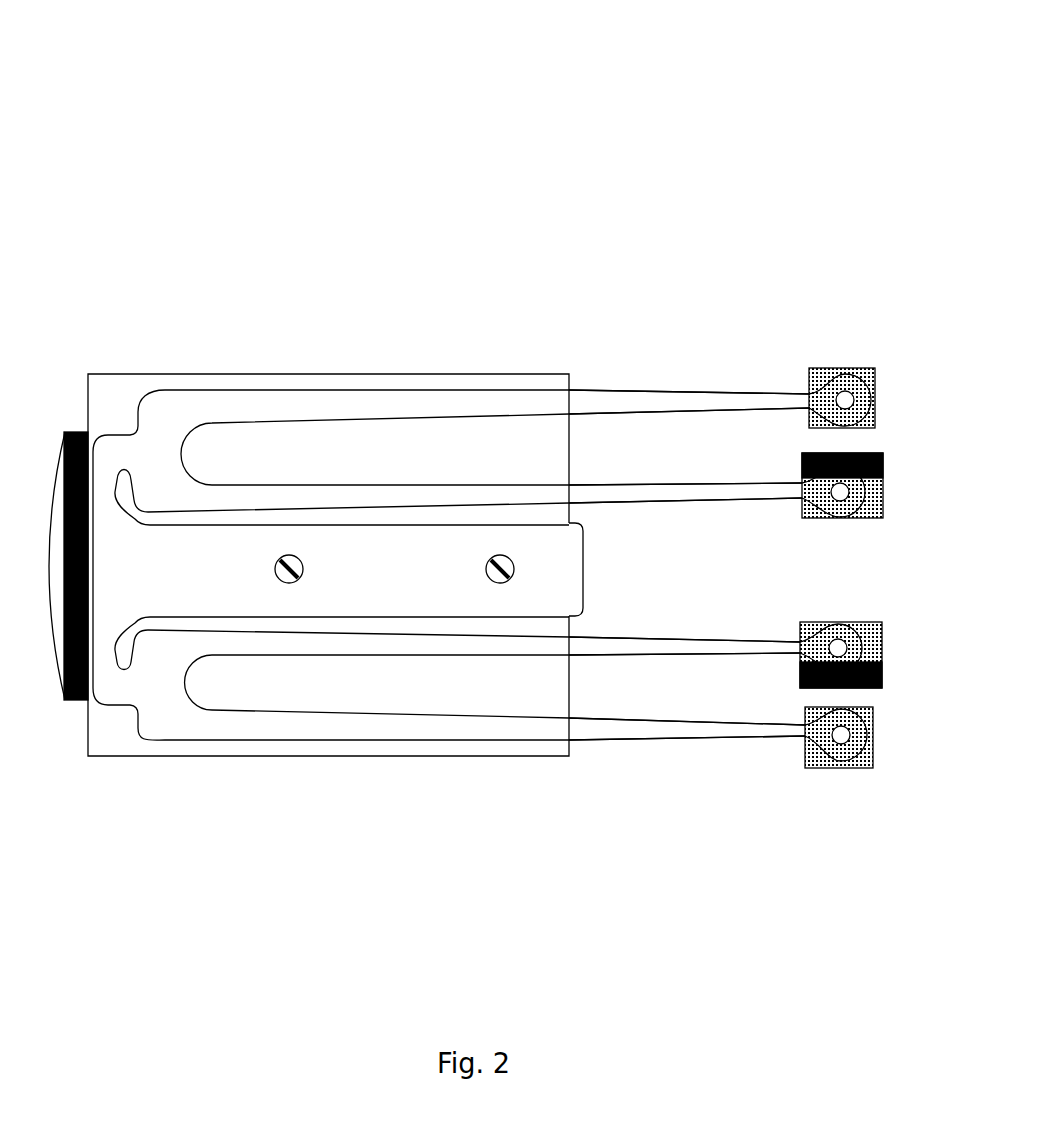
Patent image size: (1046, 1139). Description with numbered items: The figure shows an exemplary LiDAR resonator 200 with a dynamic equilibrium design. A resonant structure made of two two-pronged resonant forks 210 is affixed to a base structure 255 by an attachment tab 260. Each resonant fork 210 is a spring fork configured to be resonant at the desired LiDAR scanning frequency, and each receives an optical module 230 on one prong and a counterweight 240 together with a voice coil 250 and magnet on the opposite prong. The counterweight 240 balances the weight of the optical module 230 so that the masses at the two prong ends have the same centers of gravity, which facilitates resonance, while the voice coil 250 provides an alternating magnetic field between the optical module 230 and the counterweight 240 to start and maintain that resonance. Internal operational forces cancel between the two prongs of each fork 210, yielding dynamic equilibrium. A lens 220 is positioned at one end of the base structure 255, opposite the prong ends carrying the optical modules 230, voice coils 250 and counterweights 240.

The LiDAR resonator 200 is at (473, 46).
The two pronged resonant fork 210 is at (640, 388).
The lens 220 is at (65, 427).
The optical module 230 is at (847, 366).
The counterweight 240 is at (883, 530).
The voice coil 250 is at (886, 452).
The base structure 255 is at (510, 760).
The attachment tab 260 is at (592, 565).